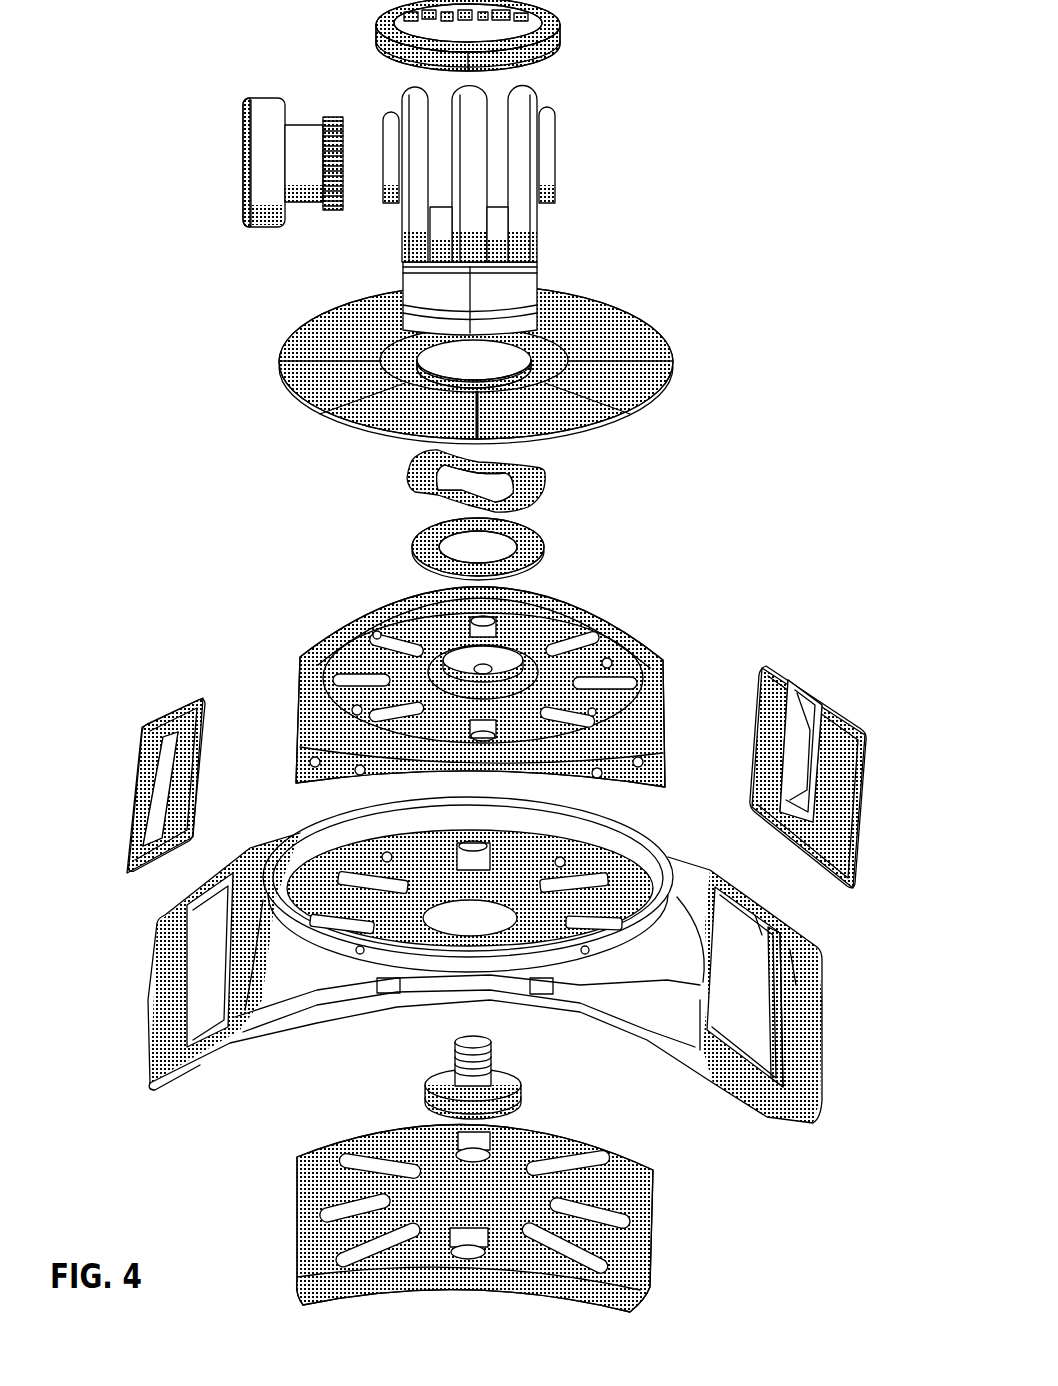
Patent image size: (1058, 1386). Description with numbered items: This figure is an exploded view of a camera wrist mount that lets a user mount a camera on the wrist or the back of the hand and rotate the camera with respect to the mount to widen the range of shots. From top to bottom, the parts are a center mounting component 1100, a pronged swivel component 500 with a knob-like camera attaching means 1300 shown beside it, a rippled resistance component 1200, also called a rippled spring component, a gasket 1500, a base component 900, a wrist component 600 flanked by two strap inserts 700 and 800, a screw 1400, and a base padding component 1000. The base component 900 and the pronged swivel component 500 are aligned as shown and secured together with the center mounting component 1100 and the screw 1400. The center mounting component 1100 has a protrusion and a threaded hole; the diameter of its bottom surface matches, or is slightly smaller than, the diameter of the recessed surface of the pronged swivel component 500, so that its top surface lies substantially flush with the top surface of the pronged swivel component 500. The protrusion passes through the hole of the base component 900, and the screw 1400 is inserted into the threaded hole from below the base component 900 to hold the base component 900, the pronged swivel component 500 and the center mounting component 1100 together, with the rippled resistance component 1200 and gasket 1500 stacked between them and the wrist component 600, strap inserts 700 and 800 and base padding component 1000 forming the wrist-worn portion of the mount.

The pronged swivel component 500 is at (558, 283).
The wrist component 600 is at (140, 1003).
The strap insert 700 is at (162, 692).
The strap insert 800 is at (798, 656).
The base component 900 is at (676, 678).
The base padding component 1000 is at (662, 1233).
The center mounting component 1100 is at (376, 22).
The rippled resistance component 1200 is at (398, 478).
The camera attaching means 1300 is at (232, 160).
The screw 1400 is at (415, 1092).
The gasket 1500 is at (402, 548).